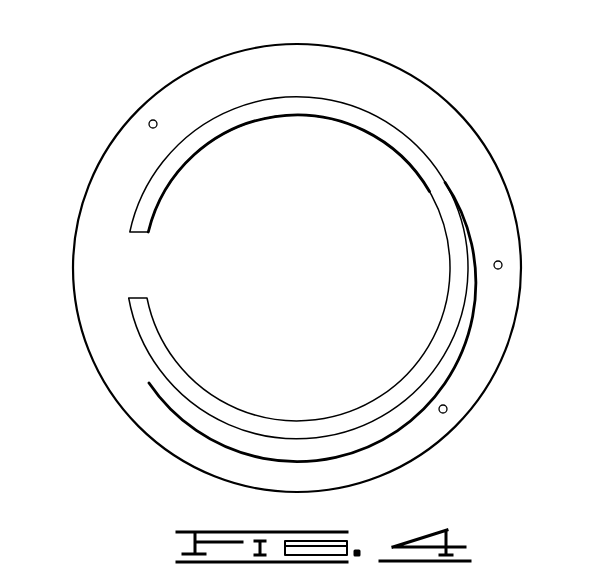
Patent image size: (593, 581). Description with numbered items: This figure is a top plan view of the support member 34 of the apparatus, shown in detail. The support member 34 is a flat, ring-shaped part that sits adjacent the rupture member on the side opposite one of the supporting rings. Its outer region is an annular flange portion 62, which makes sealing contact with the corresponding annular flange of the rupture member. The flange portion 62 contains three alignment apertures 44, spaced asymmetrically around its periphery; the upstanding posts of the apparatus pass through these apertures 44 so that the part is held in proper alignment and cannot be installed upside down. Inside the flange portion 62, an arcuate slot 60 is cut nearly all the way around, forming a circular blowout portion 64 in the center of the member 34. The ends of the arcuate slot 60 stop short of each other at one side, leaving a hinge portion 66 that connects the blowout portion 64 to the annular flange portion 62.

The support member 34 is at (456, 104).
The apertures 44 is at (150, 121).
The arcuate slot 60 is at (354, 110).
The annular flange portion 62 is at (492, 199).
The circular blowout portion 64 is at (309, 262).
The hinge portion 66 is at (136, 277).